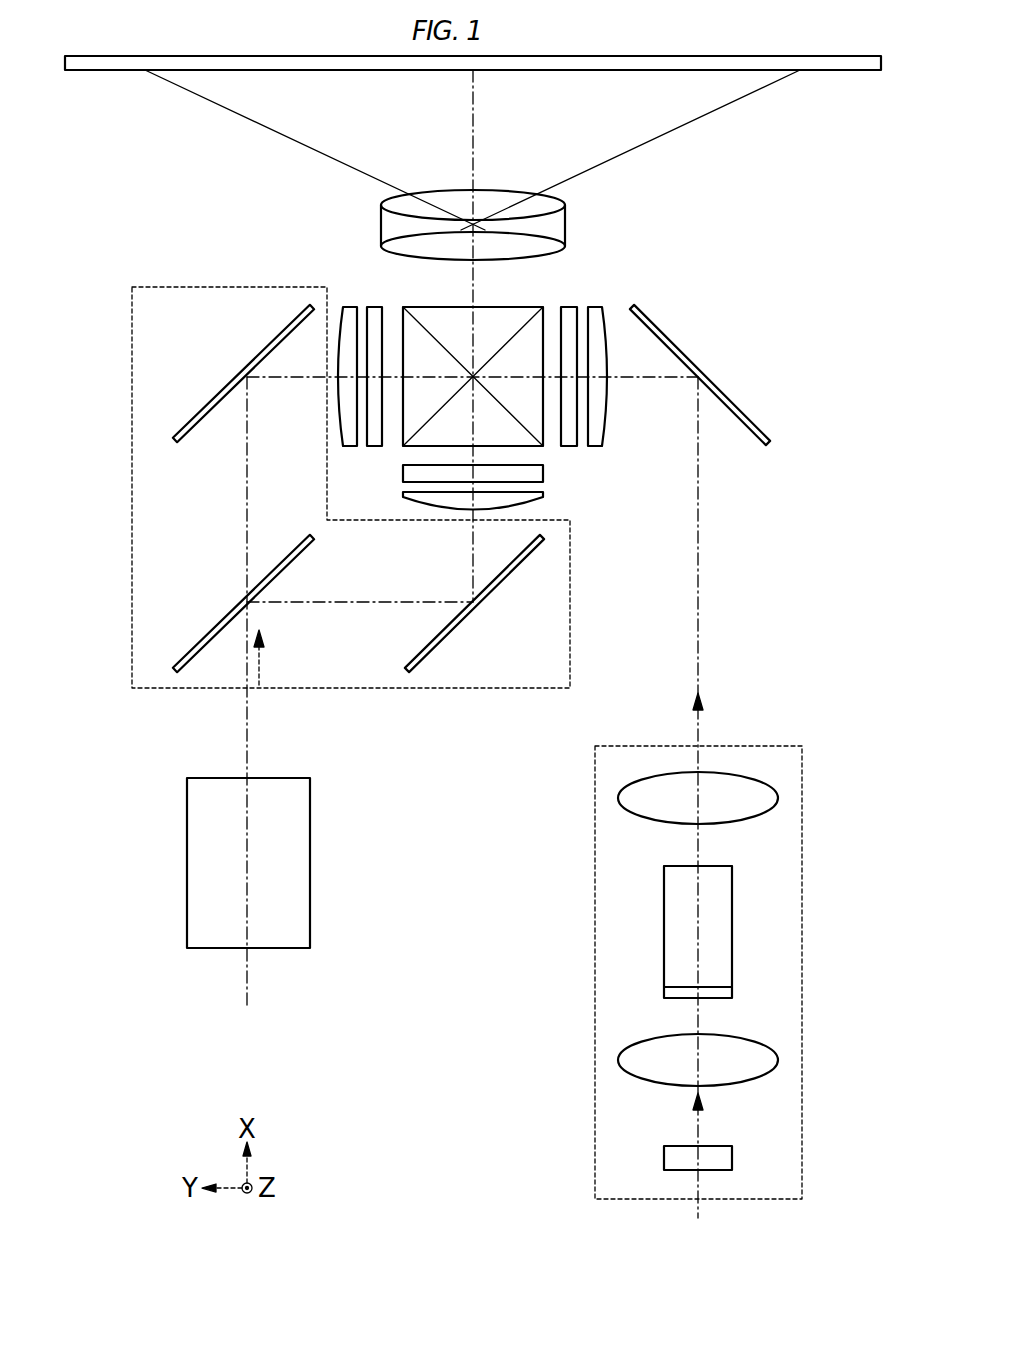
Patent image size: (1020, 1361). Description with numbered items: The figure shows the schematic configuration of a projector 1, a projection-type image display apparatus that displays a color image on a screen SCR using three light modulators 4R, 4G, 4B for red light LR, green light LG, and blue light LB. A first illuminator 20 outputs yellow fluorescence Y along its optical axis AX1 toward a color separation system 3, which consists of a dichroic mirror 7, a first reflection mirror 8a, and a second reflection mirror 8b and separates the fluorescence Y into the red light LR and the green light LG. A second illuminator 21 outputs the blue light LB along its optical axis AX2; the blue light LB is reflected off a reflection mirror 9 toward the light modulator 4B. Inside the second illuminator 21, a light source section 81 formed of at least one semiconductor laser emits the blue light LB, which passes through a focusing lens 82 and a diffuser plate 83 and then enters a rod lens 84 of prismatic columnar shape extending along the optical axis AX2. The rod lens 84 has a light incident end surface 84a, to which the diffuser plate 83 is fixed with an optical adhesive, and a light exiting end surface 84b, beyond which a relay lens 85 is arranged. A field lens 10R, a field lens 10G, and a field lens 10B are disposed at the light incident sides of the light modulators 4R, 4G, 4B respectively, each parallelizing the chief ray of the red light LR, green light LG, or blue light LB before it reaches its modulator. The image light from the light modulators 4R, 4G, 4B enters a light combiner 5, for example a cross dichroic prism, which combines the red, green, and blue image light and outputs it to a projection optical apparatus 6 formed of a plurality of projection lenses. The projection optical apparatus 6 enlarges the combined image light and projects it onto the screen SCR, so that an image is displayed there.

The projector 1 is at (826, 262).
The color separation system 3 is at (132, 430).
The light modulator 4R is at (375, 305).
The light modulator 4G is at (410, 473).
The light modulator 4B is at (569, 305).
The light combiner 5 is at (500, 320).
The projection optical apparatus 6 is at (458, 200).
The dichroic mirror 7 is at (240, 625).
The first reflection mirror 8a is at (235, 385).
The second reflection mirror 8b is at (450, 640).
The reflection mirror 9 is at (720, 395).
The field lens 10R is at (348, 305).
The field lens 10G is at (410, 500).
The field lens 10B is at (597, 305).
The first illuminator 20 is at (310, 790).
The second illuminator 21 is at (595, 795).
The light source section 81 is at (725, 1165).
The focusing lens 82 is at (770, 1060).
The diffuser plate 83 is at (725, 992).
The rod lens 84 is at (725, 925).
The light incident end surface 84a is at (685, 993).
The light exiting end surface 84b is at (684, 866).
The relay lens 85 is at (765, 800).
The screen SCR is at (848, 72).
The optical axis AX1 is at (250, 975).
The optical axis AX2 is at (700, 1210).
The red light LR is at (247, 510).
The green light LG is at (473, 555).
The blue light LB is at (705, 535).
The yellow fluorescence Y is at (262, 680).